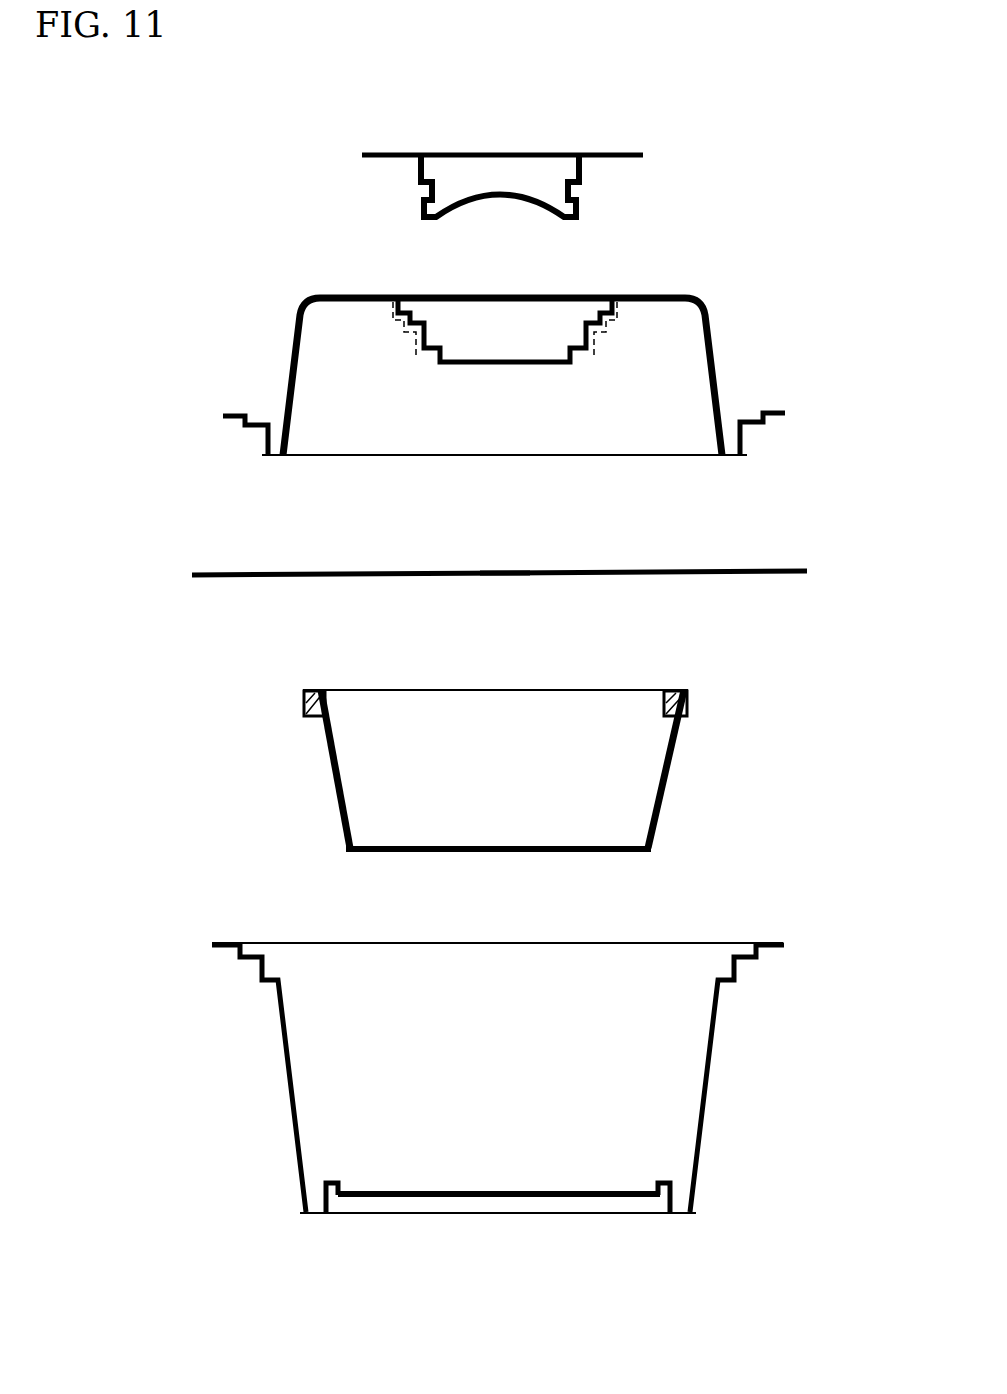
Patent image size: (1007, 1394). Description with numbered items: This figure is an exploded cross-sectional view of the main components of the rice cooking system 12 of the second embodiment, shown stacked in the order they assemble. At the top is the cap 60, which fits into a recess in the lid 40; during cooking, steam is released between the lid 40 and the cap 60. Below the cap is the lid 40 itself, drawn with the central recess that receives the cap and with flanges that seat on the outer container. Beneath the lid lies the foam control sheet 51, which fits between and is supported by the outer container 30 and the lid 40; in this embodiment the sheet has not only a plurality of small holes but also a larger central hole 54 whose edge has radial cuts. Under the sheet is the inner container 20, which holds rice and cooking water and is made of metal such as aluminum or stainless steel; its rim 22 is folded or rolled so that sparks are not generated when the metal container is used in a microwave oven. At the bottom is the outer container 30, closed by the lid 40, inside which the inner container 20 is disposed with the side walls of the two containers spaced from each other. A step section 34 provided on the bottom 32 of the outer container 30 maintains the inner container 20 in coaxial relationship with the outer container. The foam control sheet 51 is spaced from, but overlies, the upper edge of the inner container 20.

The cap 60 is at (560, 145).
The lid 40 is at (732, 377).
The foam control sheet 51 is at (755, 554).
The central hole 54 is at (503, 573).
The inner container 20 is at (676, 766).
The rim 22 is at (690, 703).
The outer container 30 is at (733, 1037).
The step section 34 is at (668, 1184).
The bottom 32 is at (545, 1197).
The rice cooking system 12 is at (511, 1267).